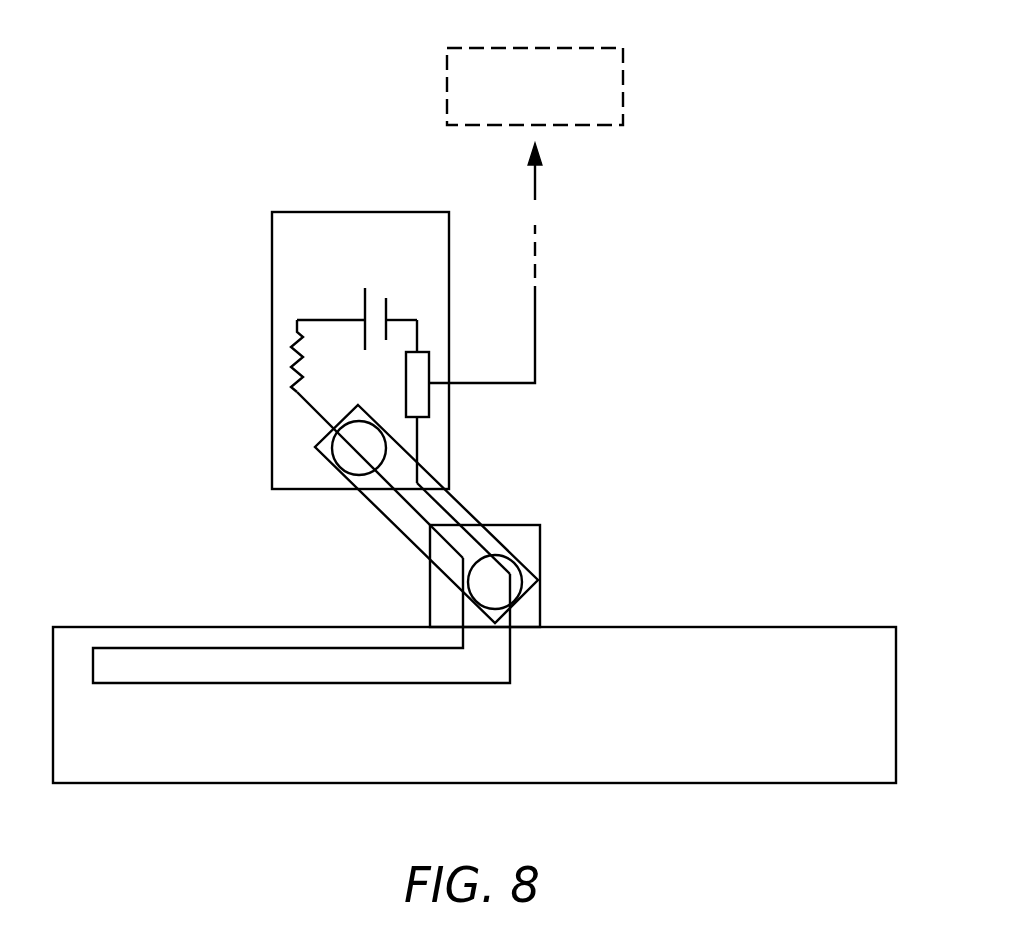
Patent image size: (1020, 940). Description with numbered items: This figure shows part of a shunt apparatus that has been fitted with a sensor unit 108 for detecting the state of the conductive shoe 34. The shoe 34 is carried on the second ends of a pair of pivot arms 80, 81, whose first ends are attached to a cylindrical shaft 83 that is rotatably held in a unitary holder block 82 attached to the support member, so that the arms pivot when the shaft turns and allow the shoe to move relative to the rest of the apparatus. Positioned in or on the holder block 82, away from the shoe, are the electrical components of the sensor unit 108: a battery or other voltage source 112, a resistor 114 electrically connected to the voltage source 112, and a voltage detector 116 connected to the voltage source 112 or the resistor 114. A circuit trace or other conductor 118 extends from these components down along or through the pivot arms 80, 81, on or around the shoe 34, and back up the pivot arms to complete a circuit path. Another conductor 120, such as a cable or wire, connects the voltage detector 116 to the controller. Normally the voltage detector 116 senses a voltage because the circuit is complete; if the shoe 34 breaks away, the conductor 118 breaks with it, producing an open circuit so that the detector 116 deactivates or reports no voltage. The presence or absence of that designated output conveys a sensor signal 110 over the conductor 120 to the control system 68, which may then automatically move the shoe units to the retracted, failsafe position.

The shoe 34 is at (727, 783).
The control system 68 is at (587, 47).
The pivot arm 80 is at (426, 514).
The pivot arm 81 is at (460, 505).
The holder block 82 is at (272, 282).
The cylindrical shaft 83 is at (340, 475).
The sensor unit 108 is at (614, 274).
The sensor signal 110 is at (537, 183).
The voltage source 112 is at (376, 303).
The resistor 114 is at (288, 342).
The voltage detector 116 is at (425, 348).
The conductor 118 is at (225, 684).
The output line 120 is at (502, 387).